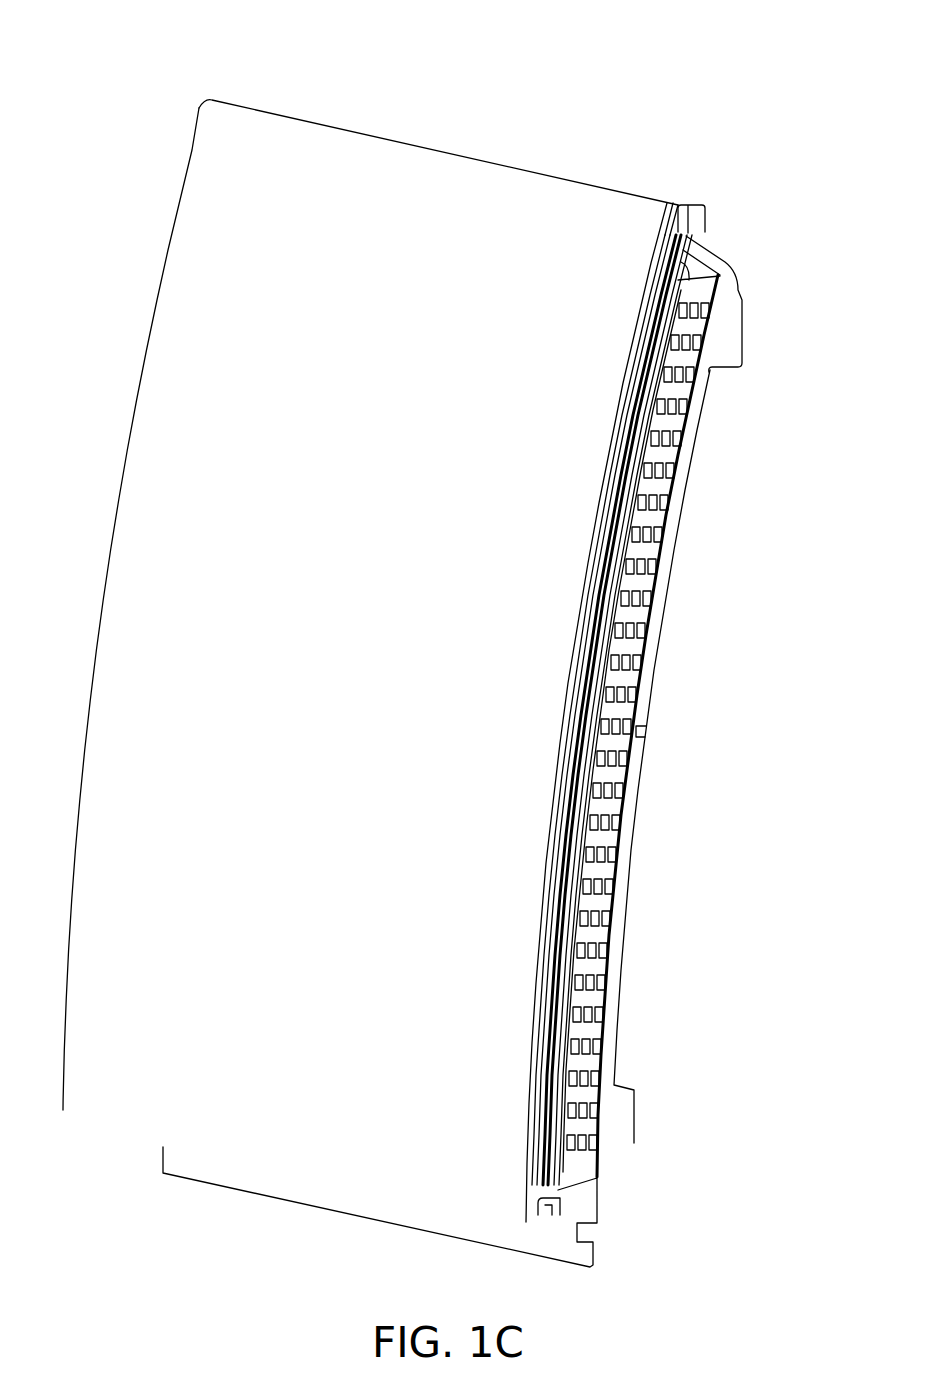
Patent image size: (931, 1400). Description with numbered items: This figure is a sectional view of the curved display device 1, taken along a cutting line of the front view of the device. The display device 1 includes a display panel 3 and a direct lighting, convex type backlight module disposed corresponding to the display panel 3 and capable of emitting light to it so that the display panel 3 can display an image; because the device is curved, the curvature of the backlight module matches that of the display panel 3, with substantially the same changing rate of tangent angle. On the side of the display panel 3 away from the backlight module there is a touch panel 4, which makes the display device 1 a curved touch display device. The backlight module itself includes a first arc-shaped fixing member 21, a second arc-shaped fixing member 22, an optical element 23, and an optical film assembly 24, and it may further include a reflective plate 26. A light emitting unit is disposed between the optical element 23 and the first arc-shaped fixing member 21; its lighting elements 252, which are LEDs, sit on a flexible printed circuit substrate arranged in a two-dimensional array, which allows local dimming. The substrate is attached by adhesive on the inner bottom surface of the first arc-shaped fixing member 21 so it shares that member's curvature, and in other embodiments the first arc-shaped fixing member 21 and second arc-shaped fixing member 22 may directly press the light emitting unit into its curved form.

The display device 1 is at (238, 40).
The touch panel 4 is at (620, 187).
The display panel 3 is at (636, 319).
The optical film assembly 24 is at (632, 369).
The second arc-shaped fixing member 22 is at (695, 194).
The optical element 23 is at (689, 280).
The first arc-shaped fixing member 21 is at (737, 250).
The lighting elements 252 is at (700, 347).
The reflective plate 26 is at (682, 398).